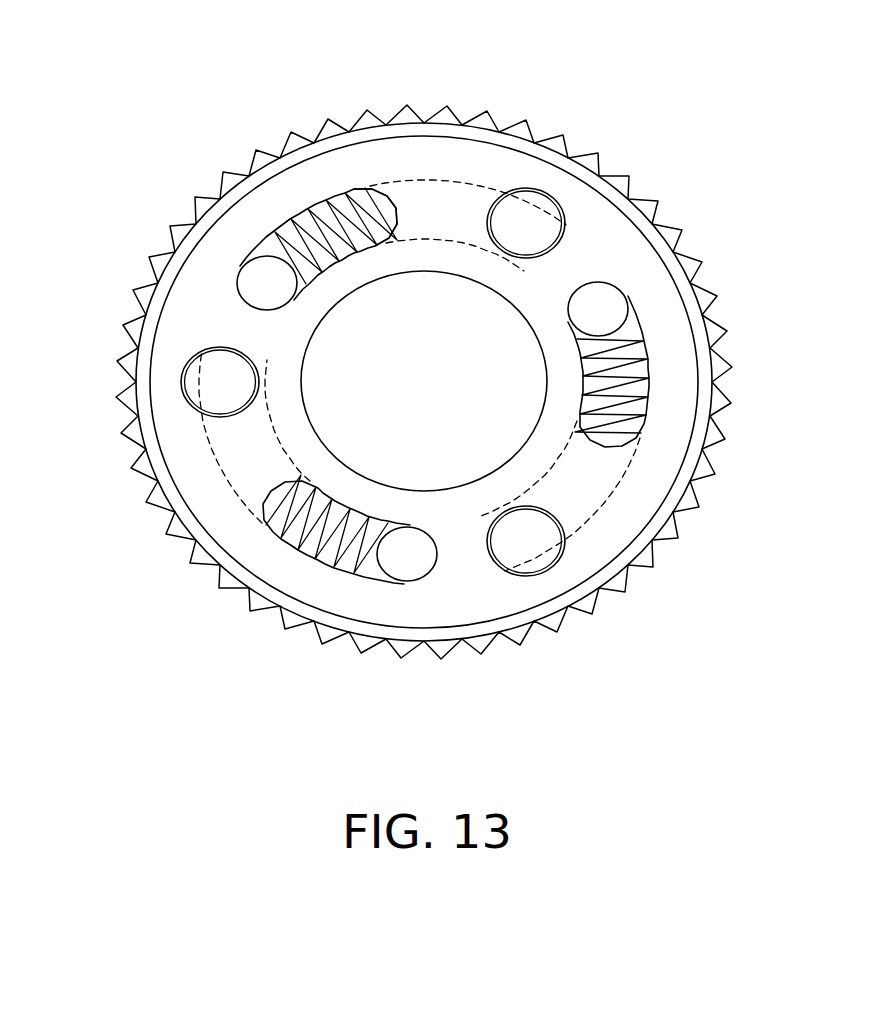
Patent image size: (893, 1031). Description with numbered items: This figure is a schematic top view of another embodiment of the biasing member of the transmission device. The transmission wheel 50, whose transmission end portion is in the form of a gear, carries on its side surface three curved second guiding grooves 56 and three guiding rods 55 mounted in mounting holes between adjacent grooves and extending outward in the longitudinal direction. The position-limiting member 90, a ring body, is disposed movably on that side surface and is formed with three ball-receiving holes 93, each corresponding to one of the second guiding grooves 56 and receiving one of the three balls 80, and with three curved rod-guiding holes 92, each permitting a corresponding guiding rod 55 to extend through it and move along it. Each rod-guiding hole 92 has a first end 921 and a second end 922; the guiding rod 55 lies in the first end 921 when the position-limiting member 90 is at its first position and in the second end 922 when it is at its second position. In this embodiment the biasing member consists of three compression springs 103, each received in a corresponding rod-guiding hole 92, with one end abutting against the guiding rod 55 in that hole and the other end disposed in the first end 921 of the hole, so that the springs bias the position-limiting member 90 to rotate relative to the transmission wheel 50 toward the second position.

The transmission wheel 50 is at (550, 118).
The guiding rod 55 is at (246, 282).
The second guiding groove 56 is at (428, 176).
The ball 80 is at (532, 200).
The position-limiting member 90 is at (668, 236).
The rod-guiding hole 92 is at (262, 277).
The ball-receiving hole 93 is at (560, 203).
The compression spring 103 is at (312, 212).
The first end 921 is at (390, 190).
The second end 922 is at (242, 302).